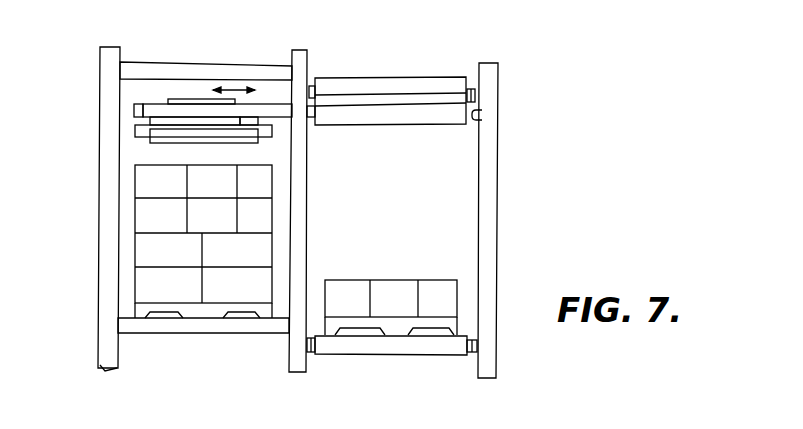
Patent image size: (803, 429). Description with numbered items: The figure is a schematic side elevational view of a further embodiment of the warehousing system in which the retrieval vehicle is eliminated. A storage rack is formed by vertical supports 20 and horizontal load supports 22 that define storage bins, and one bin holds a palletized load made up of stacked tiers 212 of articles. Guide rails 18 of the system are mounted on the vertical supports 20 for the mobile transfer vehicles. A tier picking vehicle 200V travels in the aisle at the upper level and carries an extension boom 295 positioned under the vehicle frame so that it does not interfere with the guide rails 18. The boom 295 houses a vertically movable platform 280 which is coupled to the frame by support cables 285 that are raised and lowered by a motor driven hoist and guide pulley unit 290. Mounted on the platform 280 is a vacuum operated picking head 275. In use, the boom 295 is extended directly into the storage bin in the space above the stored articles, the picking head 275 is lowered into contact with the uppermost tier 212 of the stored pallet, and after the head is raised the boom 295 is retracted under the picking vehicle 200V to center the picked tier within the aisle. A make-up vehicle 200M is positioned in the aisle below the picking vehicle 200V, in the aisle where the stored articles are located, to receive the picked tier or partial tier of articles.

The vertical support 20 is at (100, 105).
The load support 22 is at (222, 65).
The guide rail 18 is at (498, 117).
The motor driven hoist and guide pulley unit 290 is at (157, 105).
The extension boom 295 is at (280, 104).
The support cable 285 is at (147, 122).
The vertically movable platform 280 is at (147, 137).
The picking head 275 is at (236, 132).
The tier 212 is at (150, 250).
The tier picking vehicle 200V is at (438, 60).
The make-up vehicle 200M is at (420, 366).